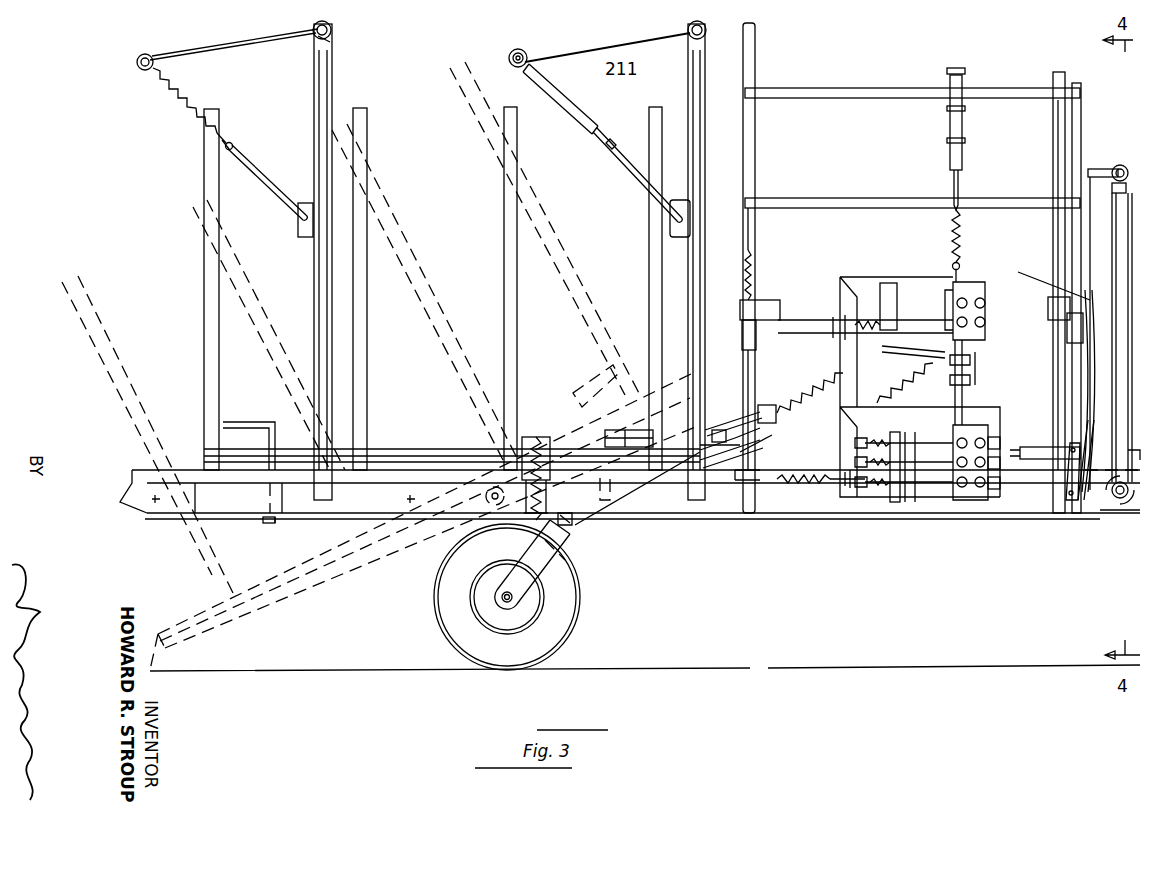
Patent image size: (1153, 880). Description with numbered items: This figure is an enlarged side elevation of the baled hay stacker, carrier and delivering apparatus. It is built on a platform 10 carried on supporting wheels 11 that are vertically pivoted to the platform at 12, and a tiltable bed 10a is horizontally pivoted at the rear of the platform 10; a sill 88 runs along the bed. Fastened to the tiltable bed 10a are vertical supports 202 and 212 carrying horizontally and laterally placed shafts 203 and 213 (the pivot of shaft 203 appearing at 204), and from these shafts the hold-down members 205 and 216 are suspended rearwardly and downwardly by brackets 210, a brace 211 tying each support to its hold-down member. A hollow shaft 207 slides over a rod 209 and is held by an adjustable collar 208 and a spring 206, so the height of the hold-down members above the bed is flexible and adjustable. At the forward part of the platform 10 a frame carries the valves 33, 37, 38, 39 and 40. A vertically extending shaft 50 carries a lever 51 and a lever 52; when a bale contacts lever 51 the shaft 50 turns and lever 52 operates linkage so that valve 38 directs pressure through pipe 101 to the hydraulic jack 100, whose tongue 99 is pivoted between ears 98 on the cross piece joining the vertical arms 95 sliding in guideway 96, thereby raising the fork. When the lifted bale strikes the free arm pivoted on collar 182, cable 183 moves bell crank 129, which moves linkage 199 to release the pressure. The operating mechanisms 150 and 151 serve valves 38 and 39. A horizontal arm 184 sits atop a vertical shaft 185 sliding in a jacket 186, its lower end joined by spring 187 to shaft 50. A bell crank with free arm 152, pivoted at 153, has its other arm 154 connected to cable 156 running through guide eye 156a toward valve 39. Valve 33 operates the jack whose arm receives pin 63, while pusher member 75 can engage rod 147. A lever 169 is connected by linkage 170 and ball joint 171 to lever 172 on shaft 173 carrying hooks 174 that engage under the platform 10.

The platform 10 is at (812, 515).
The tiltable bed 10a is at (286, 610).
The supporting wheels 11 is at (573, 593).
The vertical pivot 12 is at (575, 520).
The valve 33 is at (985, 320).
The valve 37 is at (972, 440).
The valve 38 is at (992, 443).
The valve 39 is at (982, 488).
The valve 40 is at (985, 302).
The vertically extending shaft 50 is at (962, 268).
The laterally extending lever 51 is at (900, 355).
The laterally extending lever 52 is at (947, 385).
The pin 63 is at (514, 156).
The vertically extending pusher member 75 is at (1057, 143).
The deck sill 88 is at (428, 452).
The vertical arms 95 is at (1112, 168).
The guideway 96 is at (1098, 350).
The forwardly extending ears 98 is at (1110, 170).
The tongue 99 is at (1112, 180).
The hydraulic jack 100 is at (1113, 368).
The pipe 101 is at (1124, 500).
The bell crank 129 is at (1085, 500).
The rod 147 is at (762, 500).
The operating mechanism 150 is at (905, 432).
The operating mechanism 151 is at (912, 502).
The free arm 152 is at (245, 422).
The pivot 153 is at (265, 522).
The bell crank arm 154 is at (276, 523).
The cable 156 is at (415, 518).
The guide eye 156a is at (572, 545).
The lever 169 is at (620, 430).
The linkage 170 is at (712, 422).
The ball joint 171 is at (728, 436).
The lever 172 is at (708, 470).
The shaft 173 is at (740, 470).
The hooks 174 is at (737, 515).
The vertically adjustable collar 182 is at (1078, 296).
The cable 183 is at (1090, 460).
The horizontal arm 184 is at (952, 72).
The vertical shaft 185 is at (965, 72).
The jacket 186 is at (964, 118).
The spring 187 is at (950, 232).
The linkage 199 is at (1038, 460).
The vertical support 202 is at (326, 68).
The shaft 203 is at (330, 32).
The pulley pin 204 is at (328, 40).
The hold-down member 205 is at (142, 57).
The spring 206 is at (180, 99).
The hollow shaft 207 is at (224, 146).
The adjustable collar 208 is at (232, 142).
The rod 209 is at (252, 163).
The bracket 210 is at (298, 228).
The brace cable 211 is at (245, 57).
The vertical support 212 is at (707, 50).
The shaft 213 is at (705, 32).
The hold-down member 216 is at (516, 50).